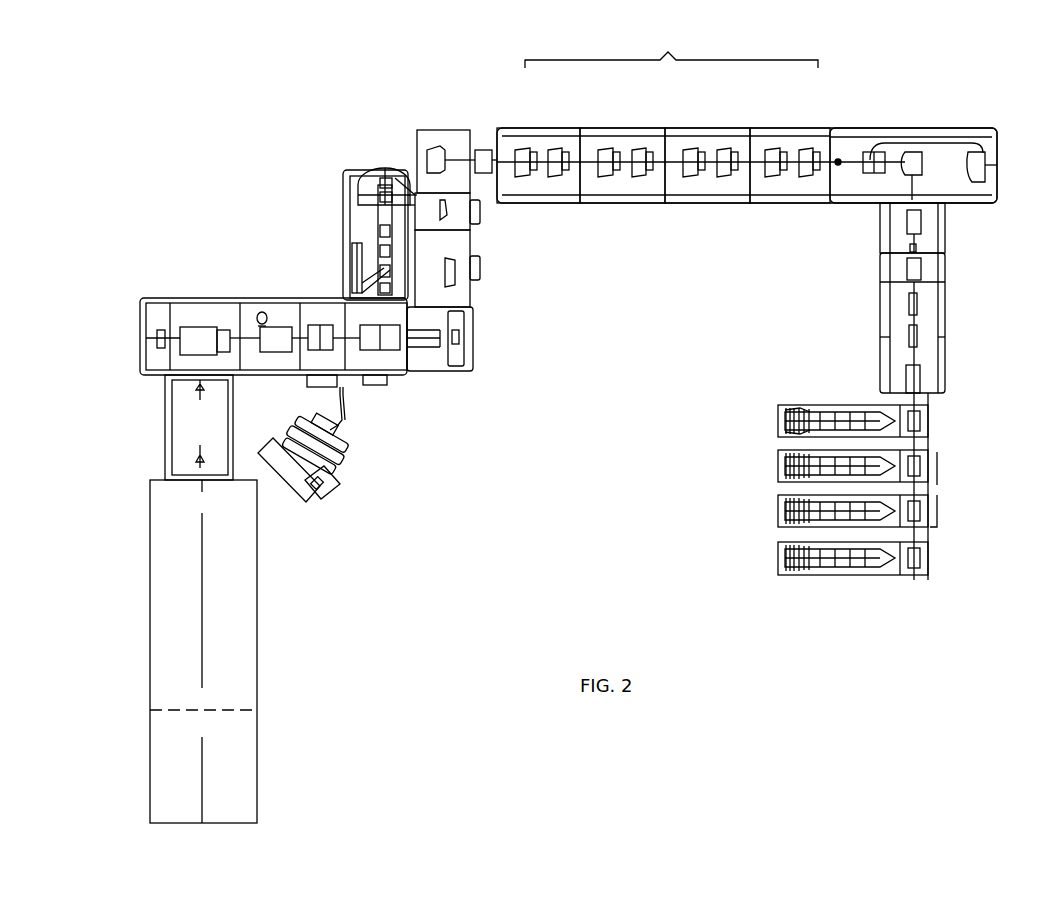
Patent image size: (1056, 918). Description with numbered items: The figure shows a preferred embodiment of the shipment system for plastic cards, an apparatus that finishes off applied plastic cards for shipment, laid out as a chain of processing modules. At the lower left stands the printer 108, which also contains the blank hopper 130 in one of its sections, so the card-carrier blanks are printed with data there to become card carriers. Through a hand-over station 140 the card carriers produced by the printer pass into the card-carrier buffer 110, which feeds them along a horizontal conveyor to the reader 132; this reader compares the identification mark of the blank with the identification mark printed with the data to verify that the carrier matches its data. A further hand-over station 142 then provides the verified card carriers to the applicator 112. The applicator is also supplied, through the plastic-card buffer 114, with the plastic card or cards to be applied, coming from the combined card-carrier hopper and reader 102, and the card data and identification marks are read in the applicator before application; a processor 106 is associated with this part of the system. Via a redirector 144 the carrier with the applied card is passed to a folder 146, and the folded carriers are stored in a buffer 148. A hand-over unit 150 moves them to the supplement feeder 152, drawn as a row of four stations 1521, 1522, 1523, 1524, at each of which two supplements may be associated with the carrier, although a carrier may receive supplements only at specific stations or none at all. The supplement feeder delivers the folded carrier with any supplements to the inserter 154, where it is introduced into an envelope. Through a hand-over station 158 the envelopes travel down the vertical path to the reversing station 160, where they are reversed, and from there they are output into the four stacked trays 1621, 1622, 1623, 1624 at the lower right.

The card-carrier hopper 102 is at (372, 178).
The processor 106 is at (330, 498).
The printer 108 is at (257, 607).
The card-carrier buffer 110 is at (185, 323).
The applicator 112 is at (395, 378).
The plastic-card buffer 114 is at (365, 262).
The hopper 130 is at (242, 778).
The reader 132 is at (248, 310).
The hand-over station 140 is at (165, 420).
The hand-over station 142 is at (312, 310).
The redirector 144 is at (473, 355).
The folder 146 is at (470, 240).
The buffer 148 is at (436, 130).
The hand-over unit 150 is at (483, 130).
The supplement feeder 152 is at (747, 115).
The station 1521 is at (543, 130).
The station 1522 is at (620, 130).
The station 1523 is at (707, 130).
The station 1524 is at (785, 130).
The inserter 154 is at (973, 130).
The hand-over station 158 is at (945, 250).
The reversing station 160 is at (945, 318).
The tray 1621 is at (782, 416).
The tray 1622 is at (782, 461).
The tray 1623 is at (782, 508).
The tray 1624 is at (782, 554).